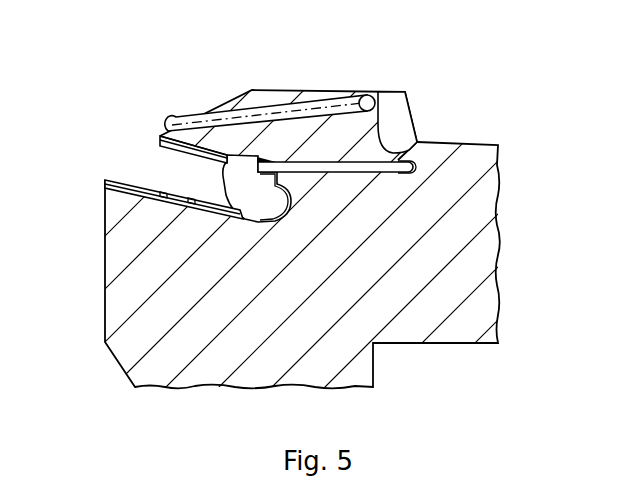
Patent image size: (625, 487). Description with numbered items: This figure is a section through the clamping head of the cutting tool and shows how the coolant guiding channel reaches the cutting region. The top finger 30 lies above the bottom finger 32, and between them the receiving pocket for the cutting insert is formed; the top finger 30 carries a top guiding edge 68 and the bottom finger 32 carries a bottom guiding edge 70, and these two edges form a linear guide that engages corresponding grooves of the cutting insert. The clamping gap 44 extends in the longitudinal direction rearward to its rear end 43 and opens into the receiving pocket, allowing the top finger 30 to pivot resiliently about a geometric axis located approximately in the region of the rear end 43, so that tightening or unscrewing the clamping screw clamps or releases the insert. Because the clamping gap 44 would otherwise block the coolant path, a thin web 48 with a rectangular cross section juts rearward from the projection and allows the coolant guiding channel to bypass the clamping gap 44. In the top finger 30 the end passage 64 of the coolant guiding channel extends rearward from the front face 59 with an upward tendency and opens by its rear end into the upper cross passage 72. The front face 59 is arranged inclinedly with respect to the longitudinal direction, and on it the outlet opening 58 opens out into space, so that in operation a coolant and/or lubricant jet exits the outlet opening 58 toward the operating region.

The top finger 30 is at (252, 97).
The bottom finger 32 is at (124, 232).
The rear end of the clamping gap 43 is at (404, 176).
The clamping gap 44 is at (354, 173).
The web 48 is at (388, 91).
The outlet opening 58 is at (170, 134).
The front face of the top finger 59 is at (197, 122).
The end passage 64 is at (292, 108).
The top guiding edge 68 is at (202, 162).
The bottom guiding edge 70 is at (127, 182).
The upper cross passage 72 is at (360, 94).